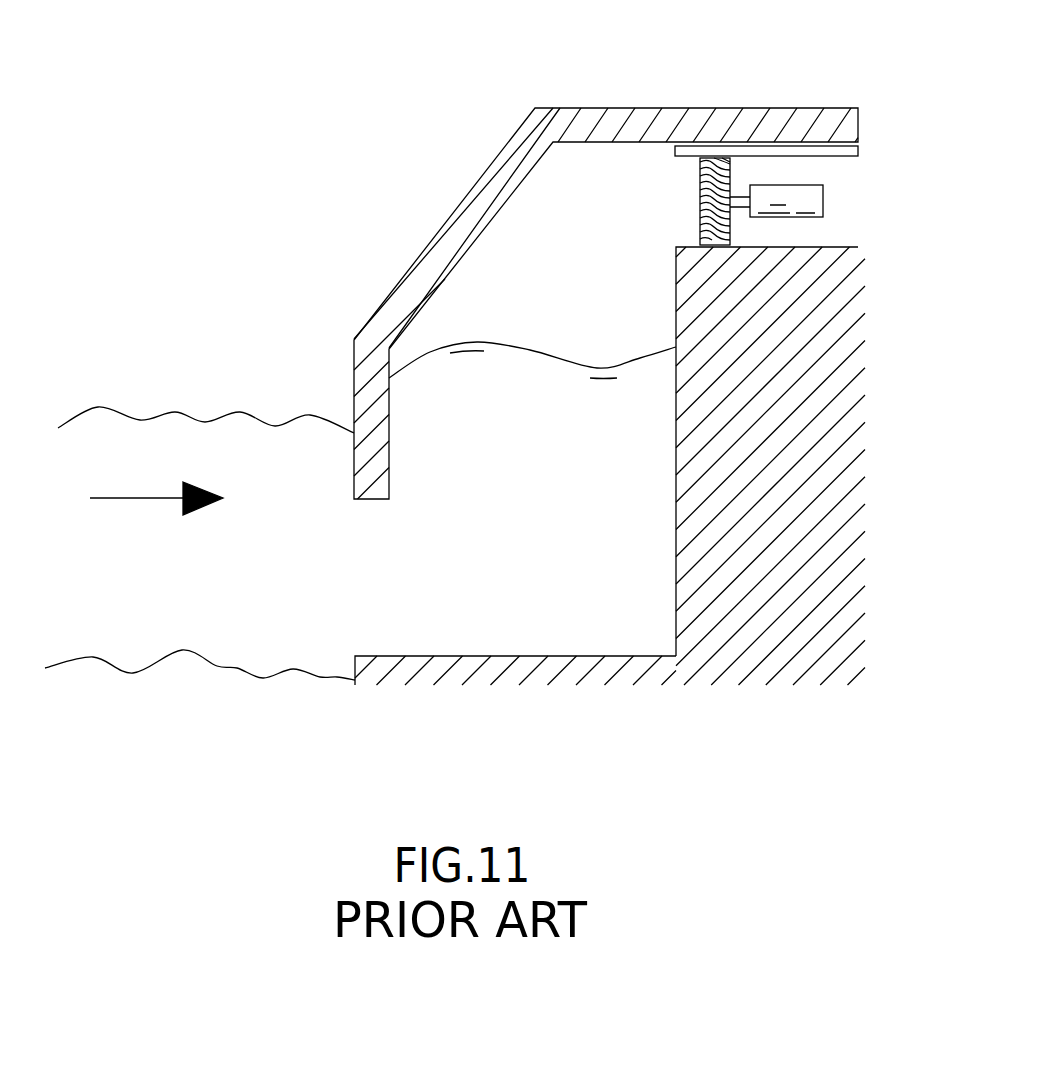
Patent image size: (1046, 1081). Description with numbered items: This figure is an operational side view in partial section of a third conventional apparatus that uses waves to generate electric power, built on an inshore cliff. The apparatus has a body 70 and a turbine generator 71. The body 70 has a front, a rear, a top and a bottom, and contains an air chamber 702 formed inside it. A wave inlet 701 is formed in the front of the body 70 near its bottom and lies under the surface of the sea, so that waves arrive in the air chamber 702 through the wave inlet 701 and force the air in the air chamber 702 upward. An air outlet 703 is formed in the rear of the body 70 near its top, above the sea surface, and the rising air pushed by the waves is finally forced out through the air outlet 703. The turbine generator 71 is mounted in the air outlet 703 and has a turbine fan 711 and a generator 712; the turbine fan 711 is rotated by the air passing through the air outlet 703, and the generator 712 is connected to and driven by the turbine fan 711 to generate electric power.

The body 70 is at (619, 255).
The turbine generator 71 is at (645, 200).
The wave inlet 701 is at (355, 501).
The air chamber 702 is at (527, 260).
The air outlet 703 is at (843, 192).
The turbine fan 711 is at (700, 183).
The generator 712 is at (783, 197).